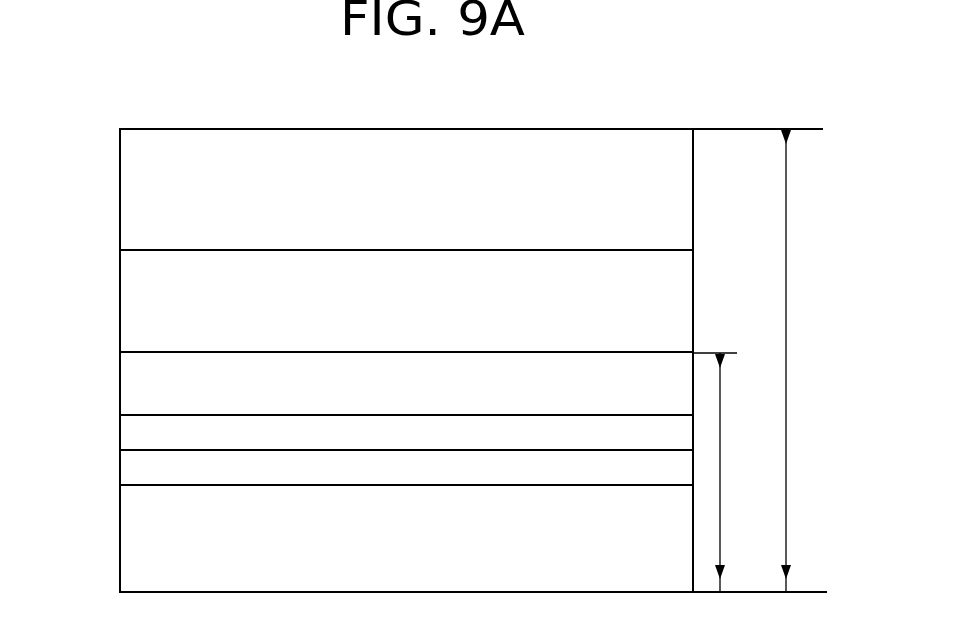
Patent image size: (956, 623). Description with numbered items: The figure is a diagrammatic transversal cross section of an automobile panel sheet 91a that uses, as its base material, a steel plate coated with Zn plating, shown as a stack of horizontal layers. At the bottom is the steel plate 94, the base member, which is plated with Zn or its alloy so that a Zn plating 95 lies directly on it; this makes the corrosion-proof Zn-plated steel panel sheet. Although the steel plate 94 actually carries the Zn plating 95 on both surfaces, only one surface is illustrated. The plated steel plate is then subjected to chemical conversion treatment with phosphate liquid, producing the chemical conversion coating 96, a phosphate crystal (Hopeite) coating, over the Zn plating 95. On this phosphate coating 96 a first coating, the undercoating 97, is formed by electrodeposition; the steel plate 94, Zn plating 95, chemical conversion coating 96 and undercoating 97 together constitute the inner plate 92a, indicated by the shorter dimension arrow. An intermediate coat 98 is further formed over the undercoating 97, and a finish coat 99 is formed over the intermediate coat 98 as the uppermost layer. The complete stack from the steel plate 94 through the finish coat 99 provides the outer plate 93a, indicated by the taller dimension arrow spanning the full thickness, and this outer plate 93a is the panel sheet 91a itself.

The automobile panel sheet 91a is at (608, 122).
The finish coat 99 is at (119, 194).
The intermediate coat 98 is at (119, 315).
The undercoating 97 is at (119, 389).
The chemical conversion coating 96 is at (119, 432).
The Zn plating 95 is at (119, 474).
The steel plate 94 is at (119, 527).
The outer plate 93a is at (820, 371).
The inner plate 92a is at (765, 498).